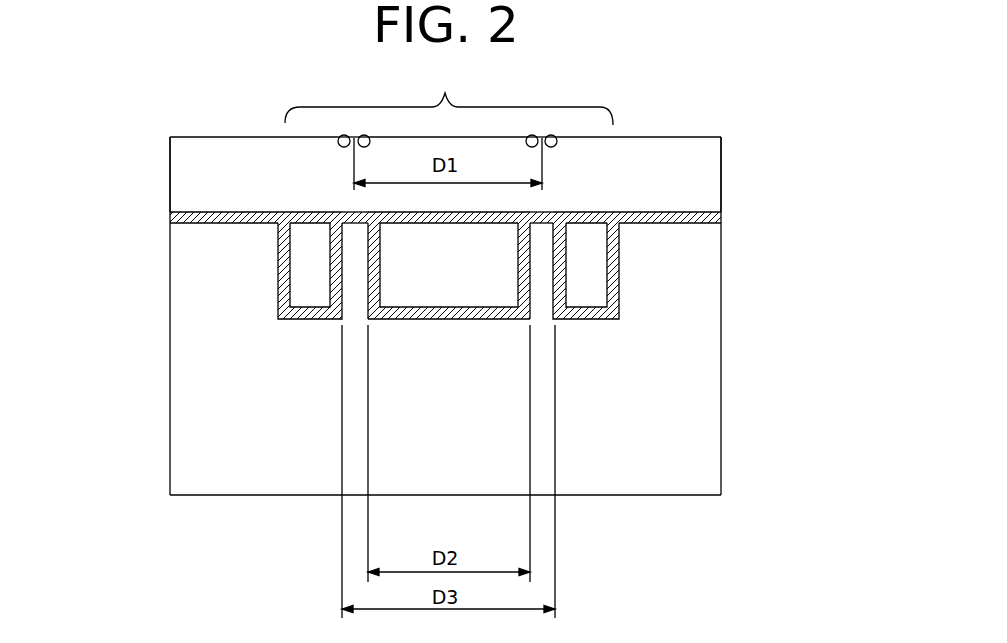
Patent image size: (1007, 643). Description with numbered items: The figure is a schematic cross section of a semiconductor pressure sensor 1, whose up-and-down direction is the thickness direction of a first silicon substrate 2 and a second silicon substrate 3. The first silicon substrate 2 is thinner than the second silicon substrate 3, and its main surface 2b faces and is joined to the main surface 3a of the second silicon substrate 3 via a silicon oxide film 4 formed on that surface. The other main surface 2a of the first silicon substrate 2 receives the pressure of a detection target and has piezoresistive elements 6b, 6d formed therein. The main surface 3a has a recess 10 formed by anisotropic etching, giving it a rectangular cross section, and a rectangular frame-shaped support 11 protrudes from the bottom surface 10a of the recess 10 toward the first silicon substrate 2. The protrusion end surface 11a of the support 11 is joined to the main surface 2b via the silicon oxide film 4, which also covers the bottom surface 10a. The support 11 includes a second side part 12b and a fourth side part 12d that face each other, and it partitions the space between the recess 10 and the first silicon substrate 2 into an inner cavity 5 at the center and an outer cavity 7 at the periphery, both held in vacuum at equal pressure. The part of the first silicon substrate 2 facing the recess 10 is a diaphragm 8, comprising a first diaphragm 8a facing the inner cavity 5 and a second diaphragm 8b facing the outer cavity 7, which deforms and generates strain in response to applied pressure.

The semiconductor pressure sensor 1 is at (685, 123).
The first silicon substrate 2 is at (685, 175).
The main surface of first silicon substrate 2a is at (208, 137).
The main surface of first silicon substrate 2b is at (217, 222).
The second silicon substrate 3 is at (685, 345).
The main surface of second silicon substrate 3a is at (198, 224).
The silicon oxide film 4 is at (717, 213).
The inner cavity 5 is at (450, 282).
The piezoresistive element 6b is at (353, 137).
The piezoresistive element 6d is at (541, 137).
The outer cavity 7 is at (307, 293).
The diaphragm 8 is at (445, 93).
The first diaphragm 8a is at (407, 170).
The second diaphragm 8b is at (312, 175).
The recess 10 is at (502, 297).
The bottom surface of recess 10a is at (413, 318).
The support 11 is at (545, 276).
The protrusion end surface 11a is at (350, 212).
The second side part 12b is at (353, 244).
The fourth side part 12d is at (545, 248).